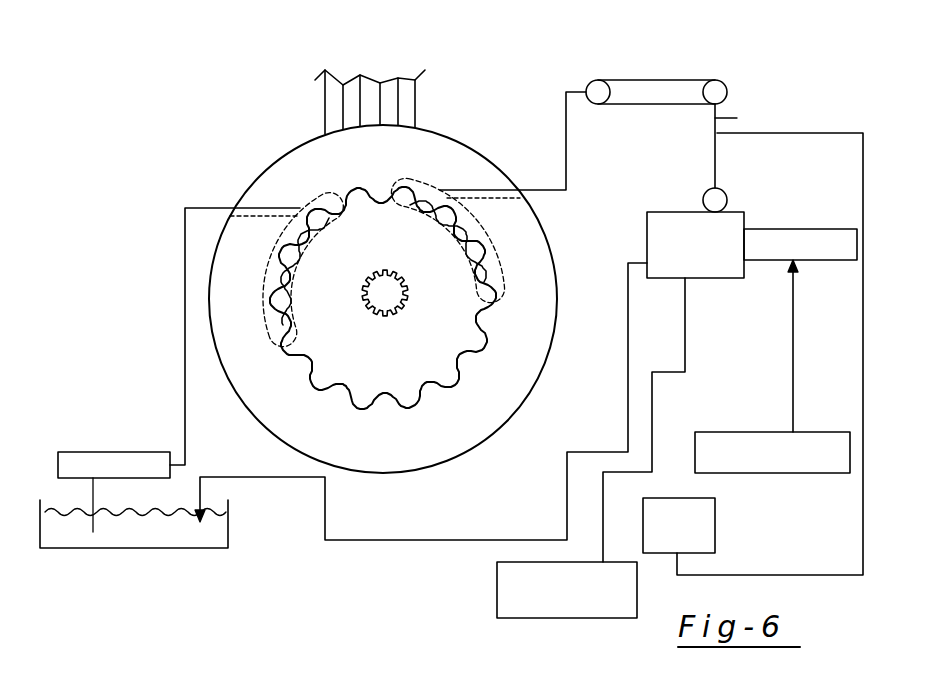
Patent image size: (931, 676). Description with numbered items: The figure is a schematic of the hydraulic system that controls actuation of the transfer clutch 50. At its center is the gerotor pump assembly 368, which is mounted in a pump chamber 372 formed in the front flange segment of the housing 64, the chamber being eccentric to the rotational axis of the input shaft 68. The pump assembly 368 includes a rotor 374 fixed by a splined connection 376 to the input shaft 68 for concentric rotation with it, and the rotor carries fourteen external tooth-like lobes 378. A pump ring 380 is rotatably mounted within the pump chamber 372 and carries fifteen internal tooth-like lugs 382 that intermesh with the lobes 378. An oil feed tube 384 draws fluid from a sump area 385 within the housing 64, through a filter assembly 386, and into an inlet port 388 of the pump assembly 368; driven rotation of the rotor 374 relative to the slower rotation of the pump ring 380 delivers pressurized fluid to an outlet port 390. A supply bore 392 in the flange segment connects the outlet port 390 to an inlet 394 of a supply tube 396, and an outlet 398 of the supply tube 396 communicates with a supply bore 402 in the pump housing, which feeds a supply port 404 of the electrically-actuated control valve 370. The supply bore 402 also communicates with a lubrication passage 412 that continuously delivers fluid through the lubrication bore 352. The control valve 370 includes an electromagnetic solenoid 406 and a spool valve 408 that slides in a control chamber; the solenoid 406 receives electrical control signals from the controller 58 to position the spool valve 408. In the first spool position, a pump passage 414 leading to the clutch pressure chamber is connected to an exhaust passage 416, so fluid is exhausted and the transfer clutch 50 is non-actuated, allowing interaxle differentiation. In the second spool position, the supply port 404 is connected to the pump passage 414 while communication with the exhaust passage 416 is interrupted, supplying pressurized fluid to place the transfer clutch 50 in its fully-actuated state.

The gerotor pump assembly 368 is at (236, 150).
The housing 64 is at (375, 82).
The rotor 374 is at (447, 287).
The input shaft 68 is at (385, 296).
The inlet port 388 is at (278, 268).
The outlet port 390 is at (483, 253).
The internal tooth-like lugs 382 is at (488, 305).
The pump ring 380 is at (493, 383).
The splined connection 376 is at (452, 363).
The external tooth-like lobes 378 is at (330, 375).
The pump chamber 372 is at (326, 457).
The oil feed tube 384 is at (185, 343).
The sump area 385 is at (55, 523).
The filter assembly 386 is at (153, 452).
The exhaust passage 416 is at (458, 540).
The supply bore 392 is at (566, 158).
The inlet 394 is at (595, 82).
The outlet 398 is at (715, 82).
The supply tube 396 is at (642, 100).
The supply bore 402 is at (737, 118).
The supply port 404 is at (725, 193).
The electrically-actuated control valve 370 is at (746, 214).
The electromagnetic solenoid 406 is at (837, 229).
The spool valve 408 is at (768, 296).
The pump passage 414 is at (685, 309).
The lubrication passage 412 is at (863, 373).
The controller 58 is at (760, 432).
The lubrication bore 352 is at (765, 535).
The transfer clutch 50 is at (497, 599).